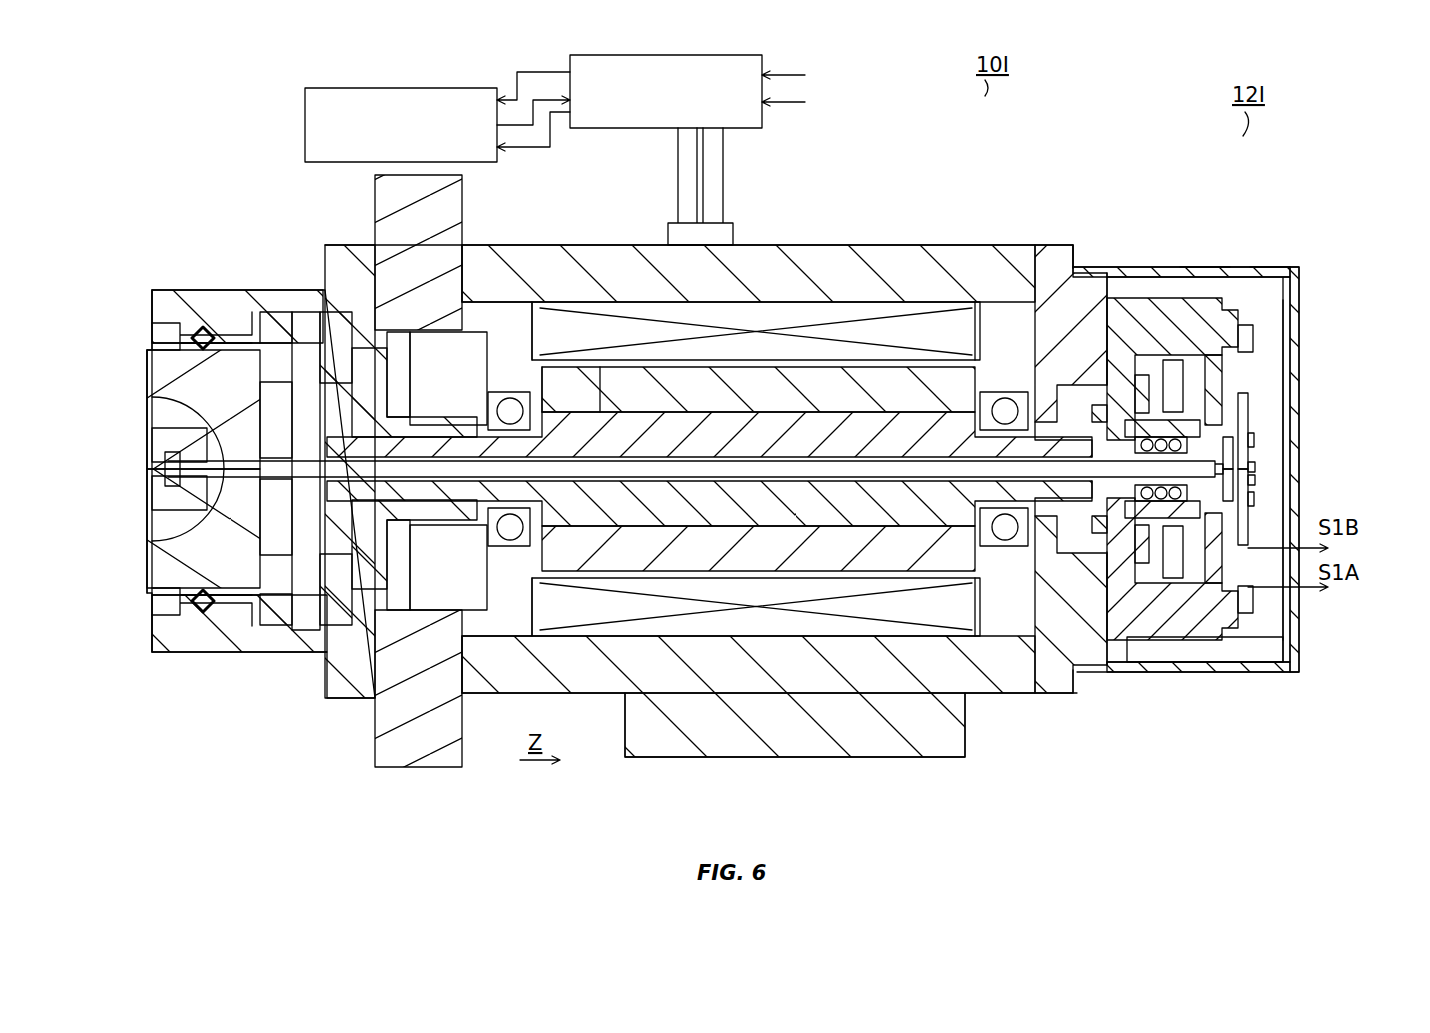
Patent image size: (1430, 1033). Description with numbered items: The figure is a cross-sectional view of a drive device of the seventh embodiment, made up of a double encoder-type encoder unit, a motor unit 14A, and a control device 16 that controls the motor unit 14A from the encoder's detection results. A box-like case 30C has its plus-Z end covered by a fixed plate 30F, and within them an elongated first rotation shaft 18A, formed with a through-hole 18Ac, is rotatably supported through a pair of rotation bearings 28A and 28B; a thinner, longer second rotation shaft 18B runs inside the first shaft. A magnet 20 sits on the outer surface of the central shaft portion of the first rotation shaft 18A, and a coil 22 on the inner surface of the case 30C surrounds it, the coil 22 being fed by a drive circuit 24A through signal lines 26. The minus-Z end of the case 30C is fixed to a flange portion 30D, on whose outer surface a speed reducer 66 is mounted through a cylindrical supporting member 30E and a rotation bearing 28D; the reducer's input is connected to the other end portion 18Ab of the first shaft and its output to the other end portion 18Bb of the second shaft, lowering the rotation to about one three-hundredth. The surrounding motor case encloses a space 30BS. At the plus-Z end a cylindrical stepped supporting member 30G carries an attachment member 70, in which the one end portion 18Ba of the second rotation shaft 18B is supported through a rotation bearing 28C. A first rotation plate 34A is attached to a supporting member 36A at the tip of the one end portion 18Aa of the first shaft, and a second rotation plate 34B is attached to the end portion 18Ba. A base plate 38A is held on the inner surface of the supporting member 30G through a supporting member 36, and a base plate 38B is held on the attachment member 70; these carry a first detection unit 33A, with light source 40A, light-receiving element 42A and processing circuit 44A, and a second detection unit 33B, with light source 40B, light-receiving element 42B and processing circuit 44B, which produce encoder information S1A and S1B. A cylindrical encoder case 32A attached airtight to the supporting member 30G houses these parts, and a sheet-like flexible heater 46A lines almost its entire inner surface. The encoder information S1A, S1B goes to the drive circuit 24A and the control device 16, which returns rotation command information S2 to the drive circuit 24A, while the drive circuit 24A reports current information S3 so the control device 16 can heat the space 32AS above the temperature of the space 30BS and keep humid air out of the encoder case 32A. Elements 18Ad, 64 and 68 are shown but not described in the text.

The control device 16 is at (401, 125).
The drive circuit 24A is at (666, 91).
The signal lines 26 is at (723, 150).
The case 30C is at (839, 245).
The supporting member 30E is at (230, 290).
The flange portion 30D is at (375, 210).
The fixed plate 30F is at (1034, 245).
The supporting member 30G is at (1135, 272).
The motor unit 14A is at (838, 780).
The encoder case 32A is at (1300, 650).
The space 32AS is at (1196, 268).
The attachment member 70 is at (1254, 269).
The rotation bearing 28C is at (1287, 330).
The heater 46A is at (1237, 662).
The magnet 20 is at (858, 328).
The coil 22 is at (908, 300).
The space 30BS is at (950, 300).
The first rotation shaft 18A is at (773, 408).
The through-hole 18Ac is at (599, 404).
The rotor portion 18Ad is at (553, 394).
The one end portion 18Aa is at (1093, 398).
The other end portion 18Ab is at (432, 423).
The spacer 64 is at (445, 540).
The other end portion 18Bb is at (224, 460).
The speed reducer 66 is at (152, 555).
The rotation bearing 28D is at (208, 610).
The second rotation shaft 18B is at (647, 458).
The rotation bearing 28B is at (508, 390).
The rotation bearing 28A is at (992, 393).
The supporting member 36A is at (1107, 330).
The supporting member 36 is at (1110, 642).
The support member 68 is at (1250, 360).
The one end portion 18Ba is at (1225, 386).
The second rotation plate 34B is at (1212, 430).
The first rotation plate 34A is at (1135, 613).
The light source 40B is at (1190, 444).
The light source 40A is at (1160, 562).
The base plate 38B is at (1233, 488).
The base plate 38A is at (1228, 537).
The second detection unit 33B is at (1401, 306).
The first detection unit 33A is at (1158, 772).
The light-receiving element 42B is at (1254, 438).
The processing circuit 44B is at (1255, 472).
The light-receiving element 42A is at (1240, 505).
The processing circuit 44A is at (1252, 483).
The current information S3 is at (533, 75).
The rotation command information S2 is at (533, 100).
The encoder information S1A is at (674, 134).
The encoder information S1B is at (806, 76).